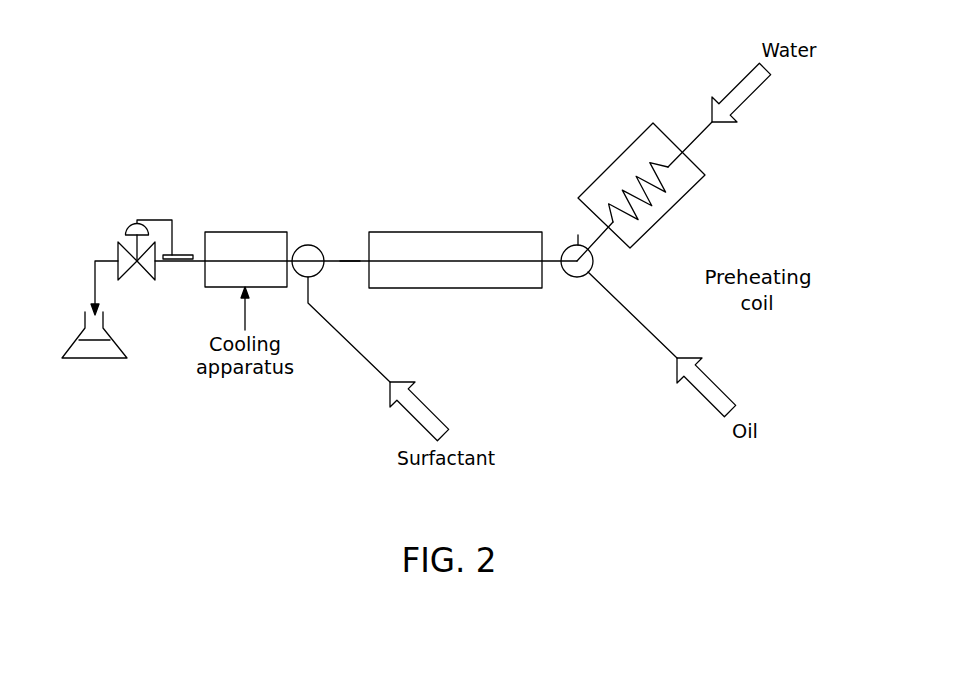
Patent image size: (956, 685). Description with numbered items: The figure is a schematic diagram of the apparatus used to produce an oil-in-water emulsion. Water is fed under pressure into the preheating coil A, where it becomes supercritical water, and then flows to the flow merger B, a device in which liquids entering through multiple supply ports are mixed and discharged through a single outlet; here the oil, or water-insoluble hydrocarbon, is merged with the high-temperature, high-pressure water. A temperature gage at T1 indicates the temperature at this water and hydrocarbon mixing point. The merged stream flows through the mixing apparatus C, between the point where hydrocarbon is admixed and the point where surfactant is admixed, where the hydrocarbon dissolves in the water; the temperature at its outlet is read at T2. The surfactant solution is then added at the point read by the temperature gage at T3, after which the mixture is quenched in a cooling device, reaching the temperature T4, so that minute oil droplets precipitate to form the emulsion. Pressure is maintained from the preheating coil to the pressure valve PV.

The temperature gage at water and hydrocarbon mixing point T1 is at (578, 250).
The temperature gage at mixing apparatus outlet T2 is at (348, 250).
The temperature gage at surfactant mixing point T3 is at (308, 250).
The temperature at cooling outlet T4 is at (245, 222).
The preheating coil A is at (691, 204).
The flow merger B is at (577, 274).
The mixing apparatus C is at (542, 226).
The pressure valve PV is at (137, 198).